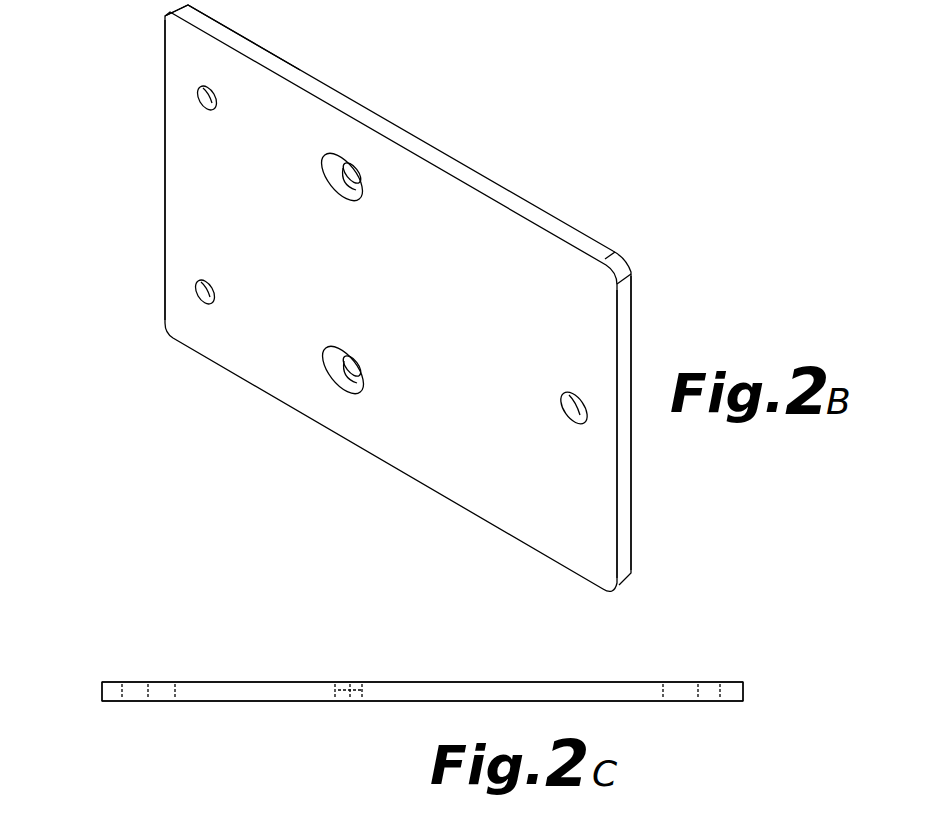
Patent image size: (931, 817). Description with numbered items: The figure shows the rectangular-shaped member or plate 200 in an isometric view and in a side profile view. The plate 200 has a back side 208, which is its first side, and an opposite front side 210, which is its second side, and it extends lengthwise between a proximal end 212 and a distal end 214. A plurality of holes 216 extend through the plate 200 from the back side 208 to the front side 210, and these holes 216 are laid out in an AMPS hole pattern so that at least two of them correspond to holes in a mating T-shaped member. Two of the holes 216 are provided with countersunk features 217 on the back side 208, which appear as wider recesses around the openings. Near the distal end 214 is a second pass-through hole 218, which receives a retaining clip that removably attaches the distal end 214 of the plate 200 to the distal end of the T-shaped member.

In FIG. 2B, the rectangular-shaped member 200 is at (714, 228).
In FIG. 2C, the rectangular-shaped member 200 is at (105, 601).
In FIG. 2B, the back side 208 is at (414, 432).
In FIG. 2C, the back side 208 is at (455, 682).
In FIG. 2C, the front side 210 is at (243, 702).
In FIG. 2B, the proximal end 212 is at (163, 193).
In FIG. 2C, the proximal end 212 is at (102, 688).
In FIG. 2B, the distal end 214 is at (623, 467).
In FIG. 2C, the distal end 214 is at (743, 692).
In FIG. 2B, the plurality of holes 216 is at (345, 167).
In FIG. 2C, the plurality of holes 216 is at (157, 680).
In FIG. 2B, the countersunk features 217 is at (340, 195).
In FIG. 2C, the countersunk features 217 is at (365, 680).
In FIG. 2B, the second pass-through hole 218 is at (566, 407).
In FIG. 2C, the second pass-through hole 218 is at (683, 682).